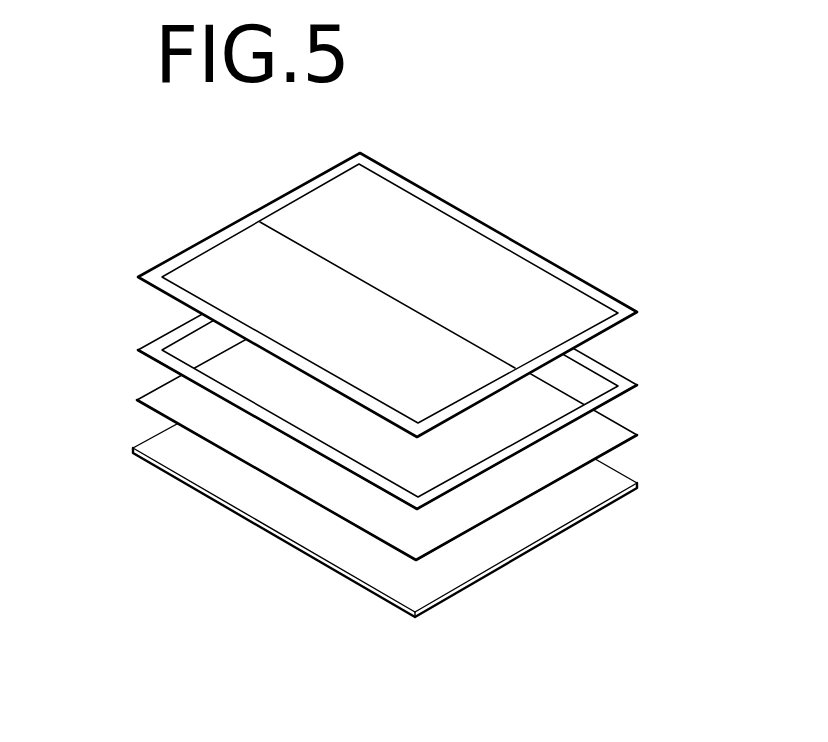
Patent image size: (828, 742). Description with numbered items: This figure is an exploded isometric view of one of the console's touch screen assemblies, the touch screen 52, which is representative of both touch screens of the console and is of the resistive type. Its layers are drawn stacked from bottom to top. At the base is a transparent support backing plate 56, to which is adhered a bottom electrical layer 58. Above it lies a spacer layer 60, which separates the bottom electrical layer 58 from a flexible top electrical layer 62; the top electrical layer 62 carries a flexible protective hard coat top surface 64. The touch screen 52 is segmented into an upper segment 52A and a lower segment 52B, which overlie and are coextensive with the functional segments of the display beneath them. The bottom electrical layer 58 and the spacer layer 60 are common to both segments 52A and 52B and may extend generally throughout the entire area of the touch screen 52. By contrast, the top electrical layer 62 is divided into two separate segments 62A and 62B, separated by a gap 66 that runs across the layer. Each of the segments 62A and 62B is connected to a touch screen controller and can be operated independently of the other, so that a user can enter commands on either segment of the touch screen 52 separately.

The touch screen assembly 52 is at (164, 160).
The upper segment 52A is at (439, 266).
The lower segment 52B is at (338, 322).
The transparent support backing plate 56 is at (592, 492).
The bottom electrical layer 58 is at (597, 442).
The spacer layer 60 is at (633, 383).
The flexible top electrical layer 62 is at (572, 273).
The segment of top electrical layer 62A is at (380, 210).
The segment of top electrical layer 62B is at (208, 273).
The flexible protective hard coat top surface 64 is at (448, 230).
The gap 66 is at (293, 240).